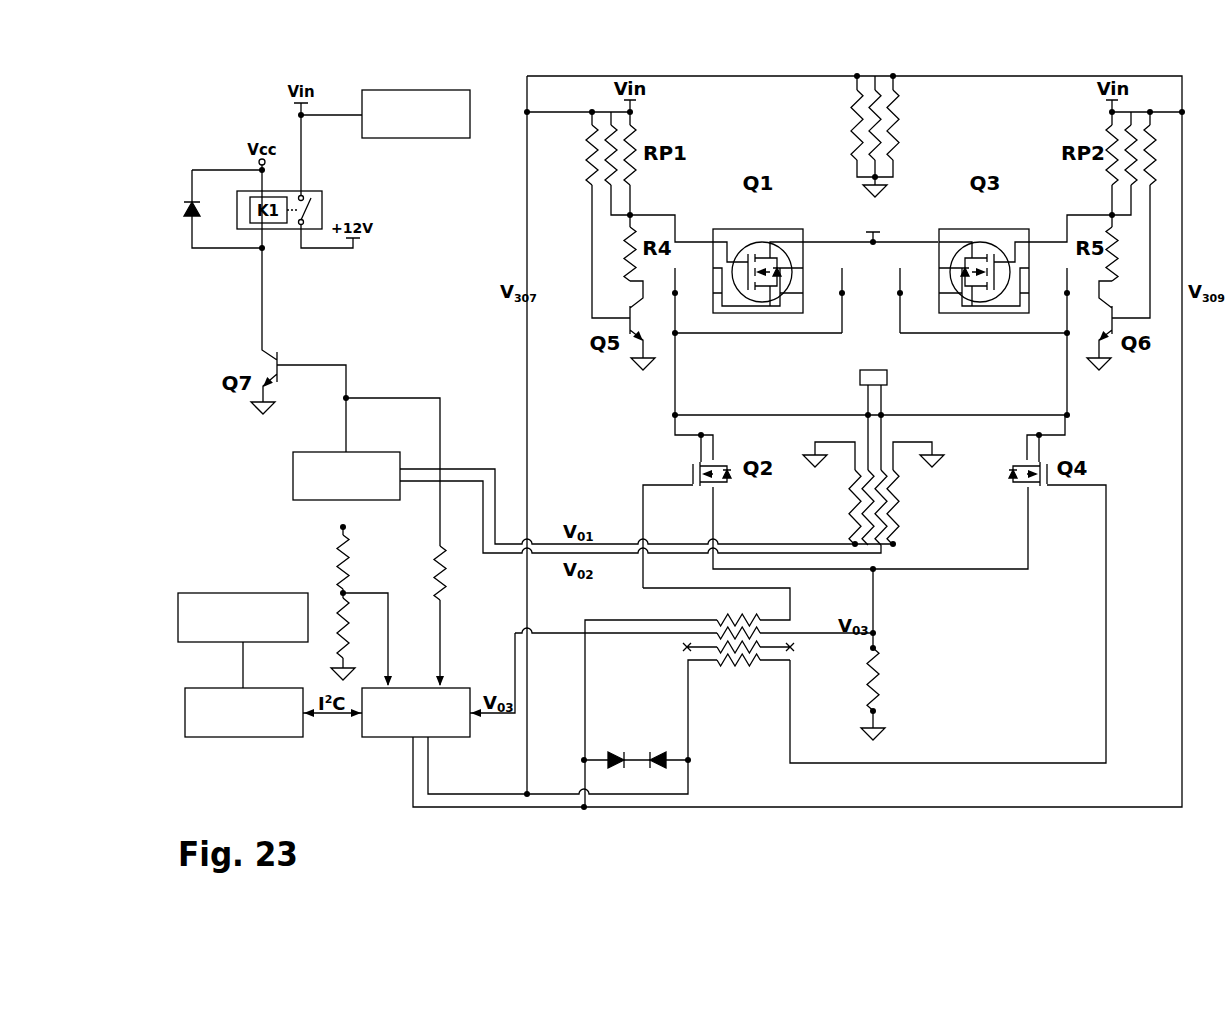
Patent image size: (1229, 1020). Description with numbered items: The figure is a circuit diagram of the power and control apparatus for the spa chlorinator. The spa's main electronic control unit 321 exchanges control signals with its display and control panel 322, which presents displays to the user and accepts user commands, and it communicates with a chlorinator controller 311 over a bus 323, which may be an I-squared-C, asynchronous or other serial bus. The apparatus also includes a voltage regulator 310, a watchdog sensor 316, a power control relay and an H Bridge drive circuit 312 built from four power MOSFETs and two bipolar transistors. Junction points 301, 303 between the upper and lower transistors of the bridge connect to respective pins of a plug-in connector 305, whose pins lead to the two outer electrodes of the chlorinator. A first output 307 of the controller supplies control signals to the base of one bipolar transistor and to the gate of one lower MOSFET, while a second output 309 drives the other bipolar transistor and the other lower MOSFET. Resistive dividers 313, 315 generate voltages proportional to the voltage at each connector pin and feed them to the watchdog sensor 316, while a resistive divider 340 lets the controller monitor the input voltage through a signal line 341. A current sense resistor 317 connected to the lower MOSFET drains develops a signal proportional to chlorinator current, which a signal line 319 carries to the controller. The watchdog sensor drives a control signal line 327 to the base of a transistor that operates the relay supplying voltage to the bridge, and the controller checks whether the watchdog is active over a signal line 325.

The junction point 301 is at (677, 415).
The junction point 303 is at (1070, 415).
The plug-in connector 305 is at (860, 377).
The output 307 is at (525, 188).
The second output 309 is at (1185, 167).
The voltage regulator 310 is at (406, 138).
The chlorinator controller 311 is at (453, 688).
The H Bridge drive circuit 312 is at (764, 121).
The resistive divider 313 is at (848, 505).
The resistive divider 315 is at (903, 514).
The watchdog sensor 316 is at (383, 452).
The current sense resistor 317 is at (892, 640).
The signal line 319 is at (823, 632).
The main electronic control unit 321 is at (230, 737).
The display and control panel 322 is at (208, 593).
The bus 323 is at (338, 719).
The signal line 325 is at (427, 398).
The control signal line 327 is at (341, 362).
The resistive divider 340 is at (331, 561).
The signal line 341 is at (375, 593).